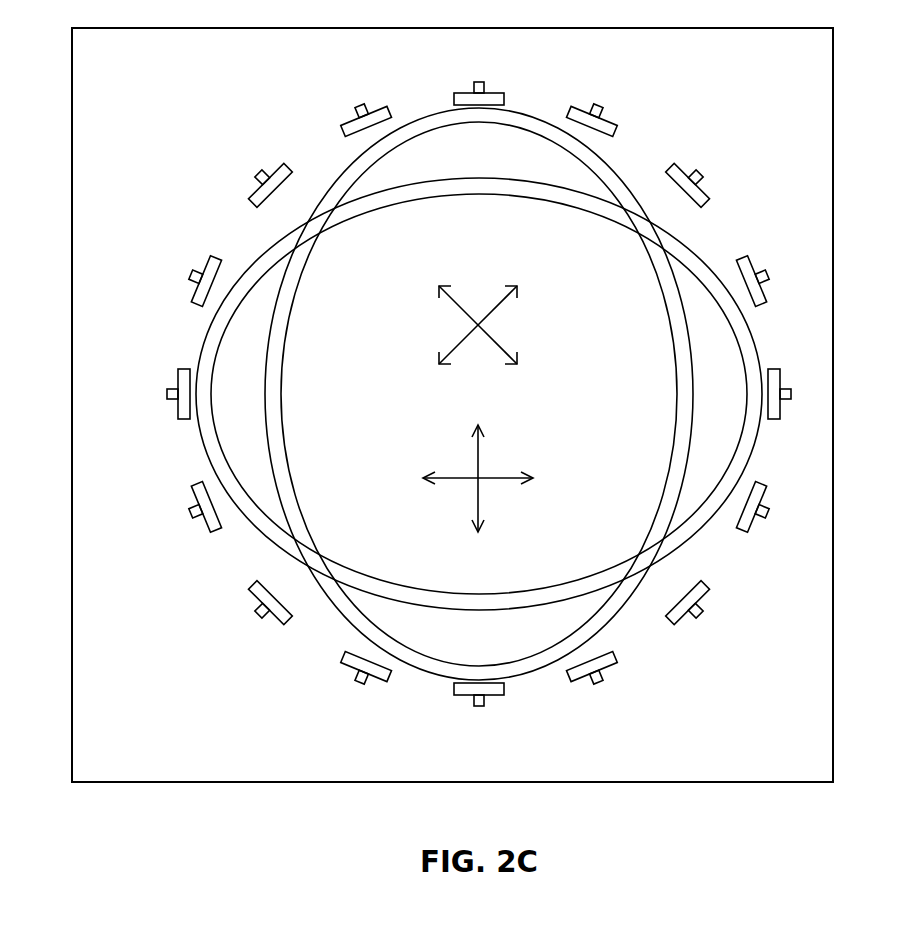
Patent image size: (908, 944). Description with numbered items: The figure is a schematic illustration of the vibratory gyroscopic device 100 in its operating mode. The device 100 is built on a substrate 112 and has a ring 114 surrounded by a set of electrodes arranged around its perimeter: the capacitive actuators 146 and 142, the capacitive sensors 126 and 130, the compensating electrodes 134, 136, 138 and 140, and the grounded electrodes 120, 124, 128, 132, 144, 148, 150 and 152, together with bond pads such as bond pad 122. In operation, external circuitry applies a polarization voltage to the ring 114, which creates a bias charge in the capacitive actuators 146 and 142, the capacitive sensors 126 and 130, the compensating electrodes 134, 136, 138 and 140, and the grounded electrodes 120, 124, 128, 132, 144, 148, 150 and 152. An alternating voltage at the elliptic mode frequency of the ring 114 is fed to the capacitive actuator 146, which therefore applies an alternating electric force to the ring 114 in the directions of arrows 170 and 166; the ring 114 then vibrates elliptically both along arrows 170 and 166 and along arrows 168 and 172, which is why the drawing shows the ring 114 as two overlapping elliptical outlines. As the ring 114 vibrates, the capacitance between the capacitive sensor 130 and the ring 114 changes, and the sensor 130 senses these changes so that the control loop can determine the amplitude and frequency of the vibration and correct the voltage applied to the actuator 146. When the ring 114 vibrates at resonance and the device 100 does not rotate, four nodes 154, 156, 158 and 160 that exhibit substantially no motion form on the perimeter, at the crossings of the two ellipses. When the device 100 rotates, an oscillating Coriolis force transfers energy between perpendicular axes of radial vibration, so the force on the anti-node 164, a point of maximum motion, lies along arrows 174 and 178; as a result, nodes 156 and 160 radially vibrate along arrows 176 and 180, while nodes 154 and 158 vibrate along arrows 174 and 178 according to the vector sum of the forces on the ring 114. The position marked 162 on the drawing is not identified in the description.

The vibratory gyroscopic device 100 is at (452, 424).
The substrate 112 is at (144, 80).
The ring 114 is at (673, 450).
The grounded electrode 120 is at (477, 392).
The bond pad 122 is at (481, 81).
The grounded electrode 124 is at (609, 120).
The capacitive sensor 126 is at (707, 191).
The grounded electrode 128 is at (751, 262).
The capacitive sensor 130 is at (775, 368).
The grounded electrode 132 is at (758, 525).
The compensating electrode 134 is at (701, 617).
The compensating electrode 136 is at (601, 669).
The compensating electrode 138 is at (508, 688).
The compensating electrode 140 is at (350, 667).
The capacitive actuator 142 is at (252, 593).
The grounded electrode 144 is at (205, 526).
The capacitive actuator 146 is at (184, 370).
The grounded electrode 148 is at (200, 265).
The grounded electrode 150 is at (250, 199).
The grounded electrode 152 is at (347, 122).
The node 154 is at (319, 556).
The node 156 is at (319, 233).
The node 158 is at (640, 232).
The node 160 is at (640, 556).
The horizontally oriented annular beam of ultrasound 162 is at (479, 394).
The anti-node 164 is at (478, 196).
The arrow 166 is at (460, 481).
The arrow 168 is at (477, 468).
The arrow 170 is at (500, 472).
The arrow 172 is at (480, 490).
The arrow 174 is at (497, 305).
The arrow 176 is at (505, 348).
The arrow 178 is at (455, 353).
The arrow 180 is at (447, 303).